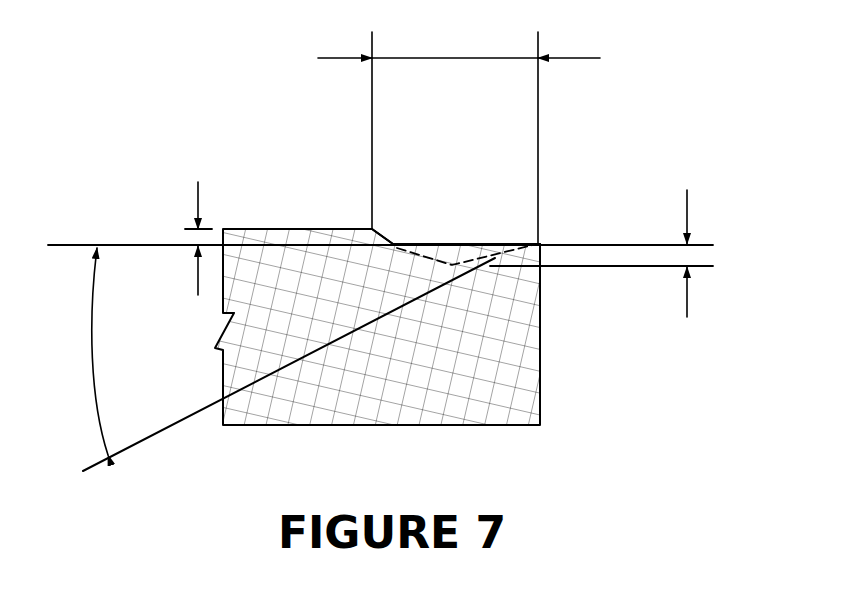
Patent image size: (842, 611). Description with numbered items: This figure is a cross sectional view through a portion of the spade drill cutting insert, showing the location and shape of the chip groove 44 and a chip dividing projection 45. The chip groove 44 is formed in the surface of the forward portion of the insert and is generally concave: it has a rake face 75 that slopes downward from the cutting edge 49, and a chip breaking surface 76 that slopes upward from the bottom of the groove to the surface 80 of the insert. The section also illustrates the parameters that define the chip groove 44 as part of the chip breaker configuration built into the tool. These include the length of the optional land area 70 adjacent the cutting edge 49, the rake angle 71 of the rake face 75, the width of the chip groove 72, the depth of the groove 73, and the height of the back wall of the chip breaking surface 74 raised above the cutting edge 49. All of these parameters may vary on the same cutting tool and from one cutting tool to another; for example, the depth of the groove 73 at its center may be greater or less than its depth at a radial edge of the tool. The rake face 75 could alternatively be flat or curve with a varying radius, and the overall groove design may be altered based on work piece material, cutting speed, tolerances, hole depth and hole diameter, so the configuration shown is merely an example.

The width of the chip groove 72 is at (470, 57).
The surface of the insert 80 is at (353, 226).
The chip breaking surface 76 is at (403, 252).
The height of the back wall of the chip breaking surface 74 is at (197, 196).
The rake angle 71 is at (93, 382).
The chip groove 44 is at (395, 225).
The chip dividing projection 45 is at (470, 243).
The land area 70 is at (528, 237).
The cutting edge 49 is at (547, 237).
The depth of the groove 73 is at (690, 295).
The rake face 75 is at (510, 258).